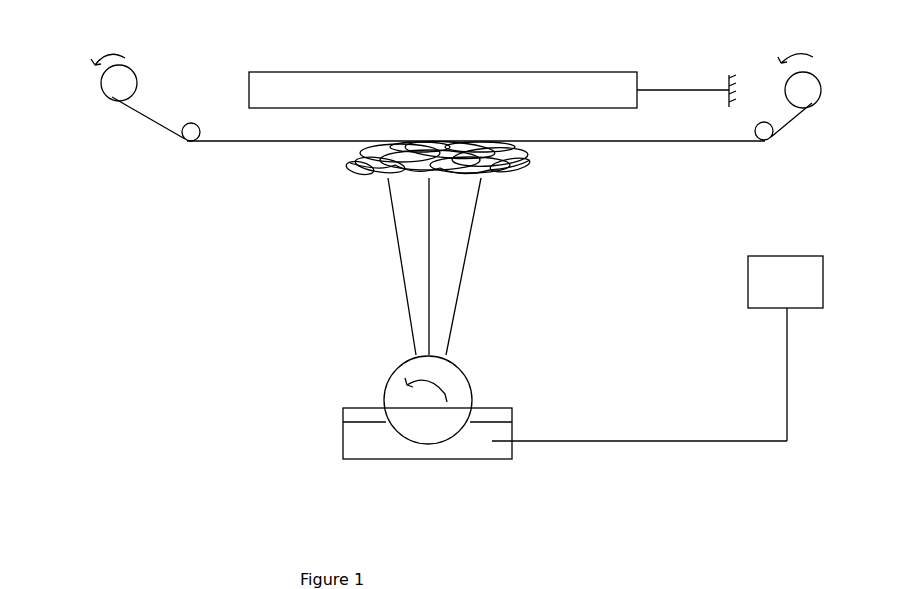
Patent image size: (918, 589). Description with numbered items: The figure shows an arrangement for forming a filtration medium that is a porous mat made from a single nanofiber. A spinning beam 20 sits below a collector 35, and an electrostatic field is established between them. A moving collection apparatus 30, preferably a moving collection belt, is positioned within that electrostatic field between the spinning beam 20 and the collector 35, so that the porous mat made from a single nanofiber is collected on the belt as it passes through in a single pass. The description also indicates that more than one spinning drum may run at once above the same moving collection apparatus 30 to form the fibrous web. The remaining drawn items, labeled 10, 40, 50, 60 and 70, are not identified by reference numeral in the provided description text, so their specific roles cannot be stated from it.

The polymer solution reservoir 10 is at (360, 441).
The spinning beam 20 is at (380, 391).
The moving collection apparatus 30 is at (265, 143).
The collector 35 is at (222, 73).
The high voltage source 40 is at (748, 282).
The fiber jets 50 is at (388, 252).
The nanofiber mat 60 is at (523, 160).
The take-up roller 70 is at (828, 105).